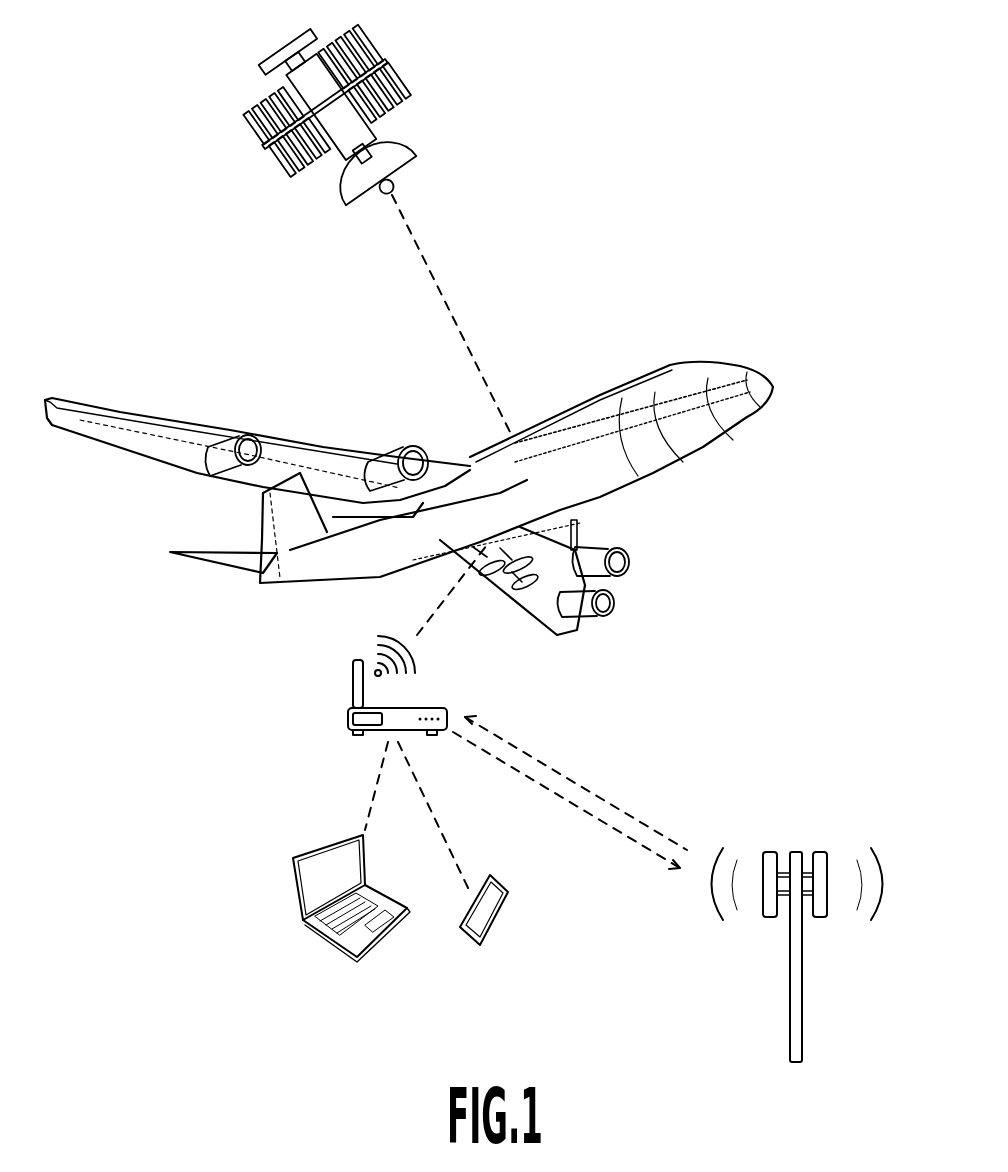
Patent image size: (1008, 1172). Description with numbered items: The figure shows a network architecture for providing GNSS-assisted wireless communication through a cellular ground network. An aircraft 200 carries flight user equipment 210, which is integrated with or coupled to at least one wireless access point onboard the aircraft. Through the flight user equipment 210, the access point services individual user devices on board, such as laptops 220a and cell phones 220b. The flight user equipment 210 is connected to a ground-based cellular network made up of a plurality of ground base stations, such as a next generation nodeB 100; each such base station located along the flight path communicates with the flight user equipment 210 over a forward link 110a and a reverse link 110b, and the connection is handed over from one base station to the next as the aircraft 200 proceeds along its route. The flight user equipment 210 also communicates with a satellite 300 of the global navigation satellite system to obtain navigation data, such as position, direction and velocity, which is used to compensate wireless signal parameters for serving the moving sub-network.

The next generation nodeB (gNB) 100 is at (790, 852).
The forward link 110a is at (662, 838).
The reverse link 110b is at (602, 822).
The aircraft 200 is at (318, 445).
The flight user equipment (Flight UE) 210 is at (342, 720).
The laptop 220a is at (300, 900).
The cell phone 220b is at (495, 923).
The satellite 300 is at (410, 147).